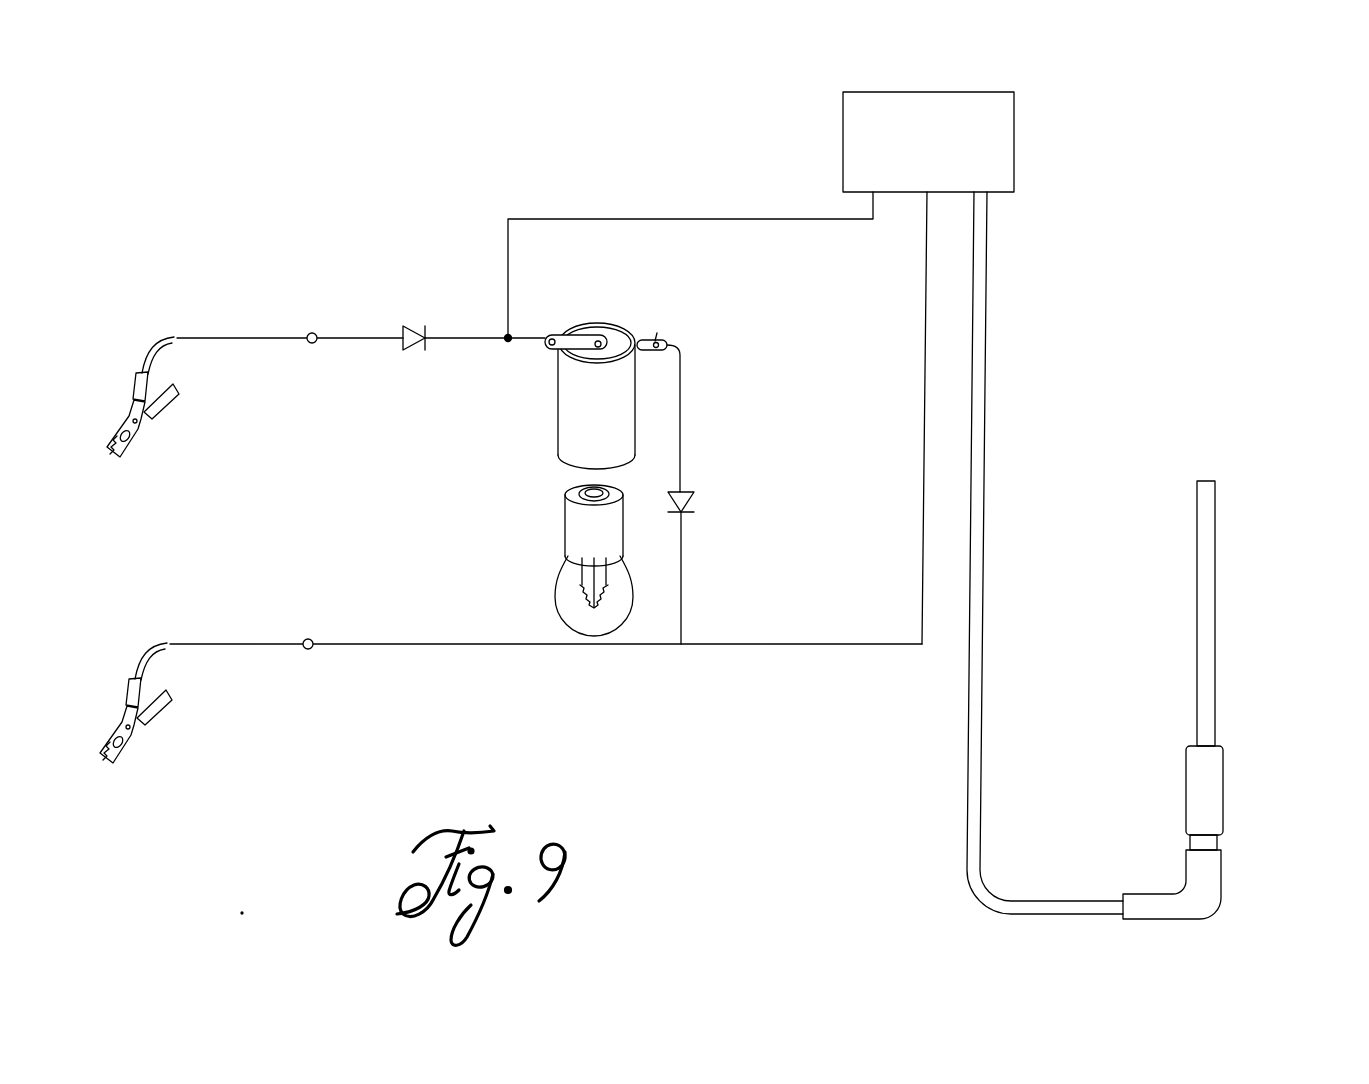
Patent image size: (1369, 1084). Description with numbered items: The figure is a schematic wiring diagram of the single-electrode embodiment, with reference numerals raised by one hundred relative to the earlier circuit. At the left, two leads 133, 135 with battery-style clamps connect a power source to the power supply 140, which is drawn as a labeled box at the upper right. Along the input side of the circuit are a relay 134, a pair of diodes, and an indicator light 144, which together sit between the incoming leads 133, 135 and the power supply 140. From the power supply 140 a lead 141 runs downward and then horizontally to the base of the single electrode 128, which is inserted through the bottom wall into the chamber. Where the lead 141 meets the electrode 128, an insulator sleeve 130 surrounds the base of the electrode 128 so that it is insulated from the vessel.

The electrode 128 is at (1205, 546).
The insulator sleeve 130 is at (1215, 785).
The lead 133 is at (230, 337).
The relay 134 is at (551, 483).
The lead 135 is at (443, 644).
The power supply 140 is at (1003, 170).
The lead 141 is at (1045, 906).
The indicator light 144 is at (568, 602).